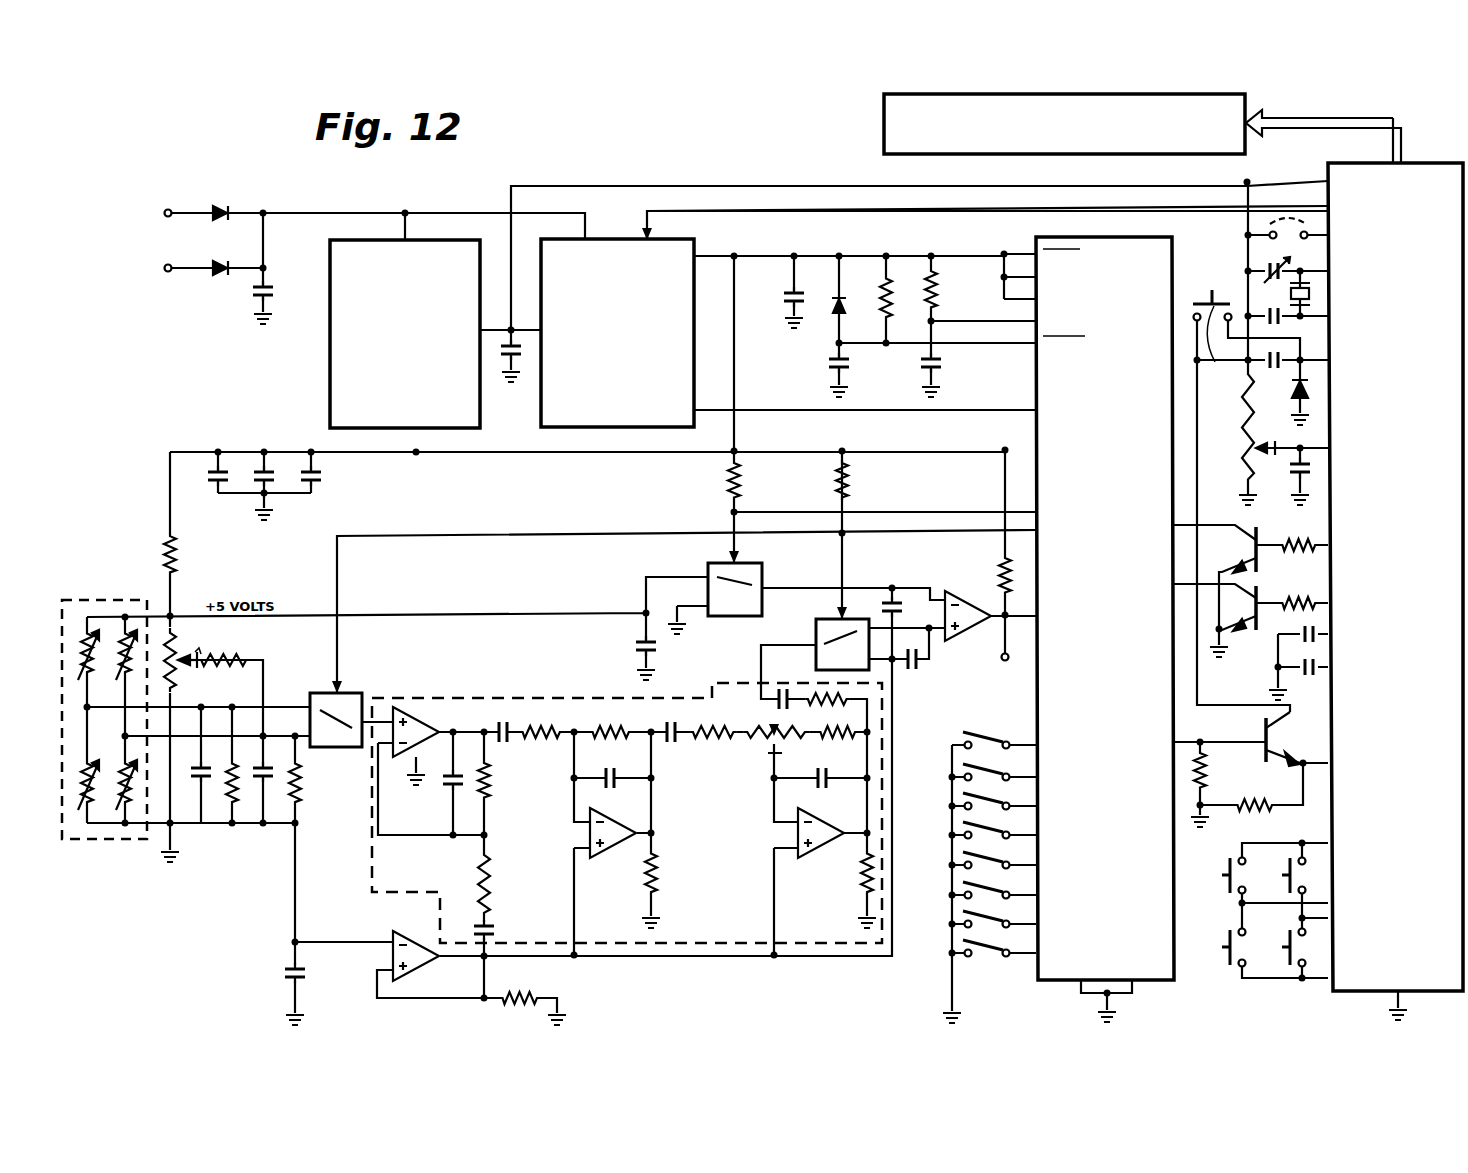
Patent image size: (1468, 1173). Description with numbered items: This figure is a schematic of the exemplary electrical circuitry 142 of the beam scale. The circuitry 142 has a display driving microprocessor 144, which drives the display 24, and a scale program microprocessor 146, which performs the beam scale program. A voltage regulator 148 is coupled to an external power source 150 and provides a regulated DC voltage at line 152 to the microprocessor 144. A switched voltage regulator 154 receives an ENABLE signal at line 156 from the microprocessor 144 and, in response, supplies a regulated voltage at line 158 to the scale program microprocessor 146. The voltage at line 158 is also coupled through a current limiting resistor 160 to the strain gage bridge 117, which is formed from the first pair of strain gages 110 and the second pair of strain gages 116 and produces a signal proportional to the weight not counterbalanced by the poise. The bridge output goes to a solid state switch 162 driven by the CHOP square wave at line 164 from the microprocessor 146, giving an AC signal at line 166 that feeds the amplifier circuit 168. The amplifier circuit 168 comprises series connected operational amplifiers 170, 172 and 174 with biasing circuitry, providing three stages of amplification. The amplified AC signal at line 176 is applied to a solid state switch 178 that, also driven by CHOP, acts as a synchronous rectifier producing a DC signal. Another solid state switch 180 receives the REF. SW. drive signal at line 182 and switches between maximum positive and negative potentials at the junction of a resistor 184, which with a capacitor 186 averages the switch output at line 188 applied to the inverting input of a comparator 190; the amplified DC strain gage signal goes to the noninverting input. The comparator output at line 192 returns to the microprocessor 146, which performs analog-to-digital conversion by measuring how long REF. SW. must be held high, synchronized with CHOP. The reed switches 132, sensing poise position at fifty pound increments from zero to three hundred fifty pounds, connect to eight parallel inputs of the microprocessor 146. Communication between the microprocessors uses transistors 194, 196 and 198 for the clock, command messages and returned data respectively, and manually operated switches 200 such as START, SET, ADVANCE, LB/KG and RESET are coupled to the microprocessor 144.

The display 24 is at (884, 123).
The first pair of strain gages 110 is at (84, 665).
The second pair of strain gages 116 is at (122, 665).
The strain gage bridge 117 is at (95, 592).
The reed switches 132 is at (1000, 738).
The electrical circuitry 142 is at (624, 140).
The display driving microprocessor 144 is at (1412, 164).
The scale program microprocessor 146 is at (1050, 237).
The voltage regulator 148 is at (330, 404).
The external power source 150 is at (163, 213).
The regulated DC voltage output line 152 is at (730, 186).
The switched voltage regulator 154 is at (543, 392).
The ENABLE input line 156 is at (747, 218).
The regulated voltage output line 158 is at (816, 256).
The current limiting resistor 160 is at (177, 551).
The solid state switch 162 is at (322, 694).
The CHOP drive signal line 164 is at (545, 535).
The AC output signal line 166 is at (388, 714).
The amplifier circuit 168 is at (551, 686).
The operational amplifier 170 is at (425, 730).
The operational amplifier 172 is at (582, 836).
The operational amplifier 174 is at (794, 836).
The amplified AC strain gage signal line 176 is at (761, 656).
The solid state switch 178 is at (816, 632).
The solid state switch 180 is at (712, 563).
The REF. SW. drive signal line 182 is at (768, 512).
The resistor 184 is at (728, 480).
The capacitor 186 is at (790, 306).
The output signal line 188 is at (805, 588).
The comparator 190 is at (975, 596).
The comparator output line 192 is at (993, 622).
The transistor 194 is at (1252, 548).
The transistor 196 is at (1265, 622).
The transistor 198 is at (1262, 748).
The manually operated switches 200 is at (1310, 965).